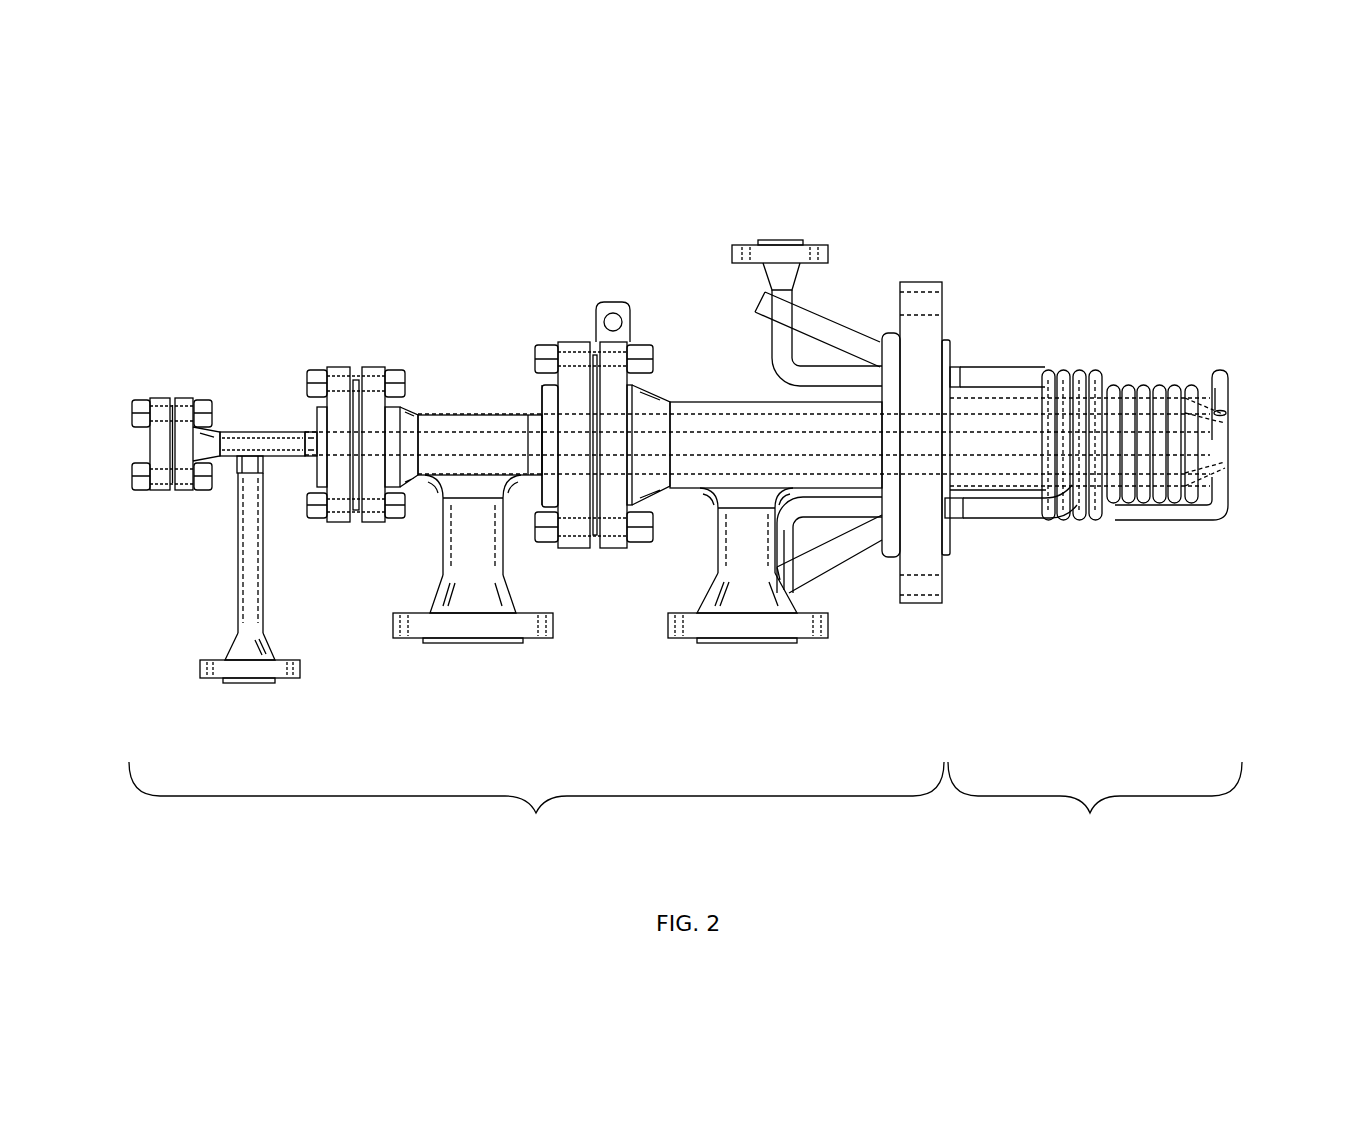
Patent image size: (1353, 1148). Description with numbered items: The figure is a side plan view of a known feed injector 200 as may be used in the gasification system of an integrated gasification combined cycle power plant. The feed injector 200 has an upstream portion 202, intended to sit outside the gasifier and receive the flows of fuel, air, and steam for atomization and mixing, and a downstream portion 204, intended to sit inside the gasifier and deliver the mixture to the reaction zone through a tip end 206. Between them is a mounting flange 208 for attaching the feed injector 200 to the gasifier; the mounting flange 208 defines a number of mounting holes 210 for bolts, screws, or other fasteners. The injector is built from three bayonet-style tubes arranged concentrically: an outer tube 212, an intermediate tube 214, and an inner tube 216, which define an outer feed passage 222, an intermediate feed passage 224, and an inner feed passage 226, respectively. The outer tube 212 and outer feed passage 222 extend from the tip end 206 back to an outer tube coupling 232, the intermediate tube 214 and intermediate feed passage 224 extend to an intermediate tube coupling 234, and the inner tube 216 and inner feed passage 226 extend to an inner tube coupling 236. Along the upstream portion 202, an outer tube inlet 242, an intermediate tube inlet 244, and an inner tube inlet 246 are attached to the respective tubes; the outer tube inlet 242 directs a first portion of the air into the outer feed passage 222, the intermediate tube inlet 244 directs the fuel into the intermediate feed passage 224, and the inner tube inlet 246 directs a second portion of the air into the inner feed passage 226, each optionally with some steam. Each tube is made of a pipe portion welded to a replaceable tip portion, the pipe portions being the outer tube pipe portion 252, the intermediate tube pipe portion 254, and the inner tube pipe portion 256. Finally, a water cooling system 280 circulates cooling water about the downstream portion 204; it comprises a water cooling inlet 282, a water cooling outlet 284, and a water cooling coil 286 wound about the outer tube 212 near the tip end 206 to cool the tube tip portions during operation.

The feed injector 200 is at (190, 98).
The upstream portion 202 is at (536, 813).
The downstream portion 204 is at (1090, 813).
The tip end 206 is at (1250, 452).
The mounting flange 208 is at (915, 285).
The mounting holes 210 is at (930, 311).
The outer tube 212 is at (740, 401).
The intermediate tube 214 is at (497, 415).
The inner tube 216 is at (292, 431).
The outer feed passage 222 is at (988, 481).
The intermediate feed passage 224 is at (1010, 464).
The inner feed passage 226 is at (1030, 446).
The outer tube coupling 232 is at (578, 322).
The intermediate tube coupling 234 is at (350, 352).
The inner tube coupling 236 is at (165, 383).
The outer tube inlet 242 is at (720, 641).
The intermediate tube inlet 244 is at (440, 641).
The inner tube inlet 246 is at (235, 684).
The outer tube pipe portion 252 is at (770, 392).
The intermediate tube pipe portion 254 is at (520, 415).
The inner tube pipe portion 256 is at (307, 431).
The water cooling system 280 is at (1102, 322).
The water cooling inlet 282 is at (791, 594).
The water cooling outlet 284 is at (790, 244).
The water cooling coil 286 is at (1140, 376).